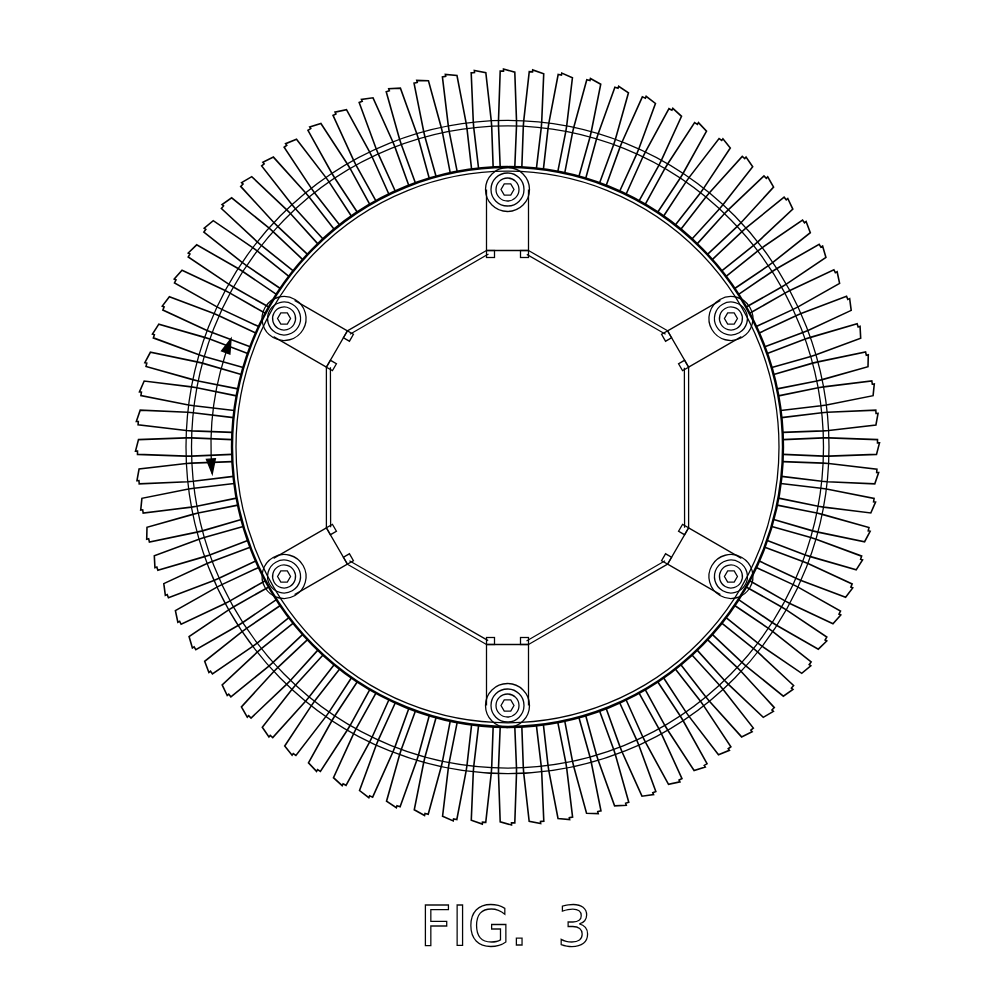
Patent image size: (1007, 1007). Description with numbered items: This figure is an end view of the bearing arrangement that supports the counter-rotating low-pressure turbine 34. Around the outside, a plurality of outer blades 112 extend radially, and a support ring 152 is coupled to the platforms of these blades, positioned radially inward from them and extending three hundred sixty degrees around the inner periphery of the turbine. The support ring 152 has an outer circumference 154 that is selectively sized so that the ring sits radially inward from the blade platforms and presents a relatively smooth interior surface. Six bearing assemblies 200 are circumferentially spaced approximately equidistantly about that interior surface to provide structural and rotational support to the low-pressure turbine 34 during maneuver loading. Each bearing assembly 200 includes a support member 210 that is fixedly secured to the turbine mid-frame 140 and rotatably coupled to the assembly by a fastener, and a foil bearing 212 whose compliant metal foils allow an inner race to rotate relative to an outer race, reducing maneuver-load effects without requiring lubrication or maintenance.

The low-pressure turbine 34 is at (523, 446).
The outer blades 112 is at (590, 93).
The turbine mid-frame 140 is at (507, 448).
The support ring 152 is at (313, 686).
The outer circumference 154 is at (212, 405).
The bearing assemblies 200 is at (470, 217).
The support member 210 is at (693, 317).
The foil bearing 212 is at (483, 188).